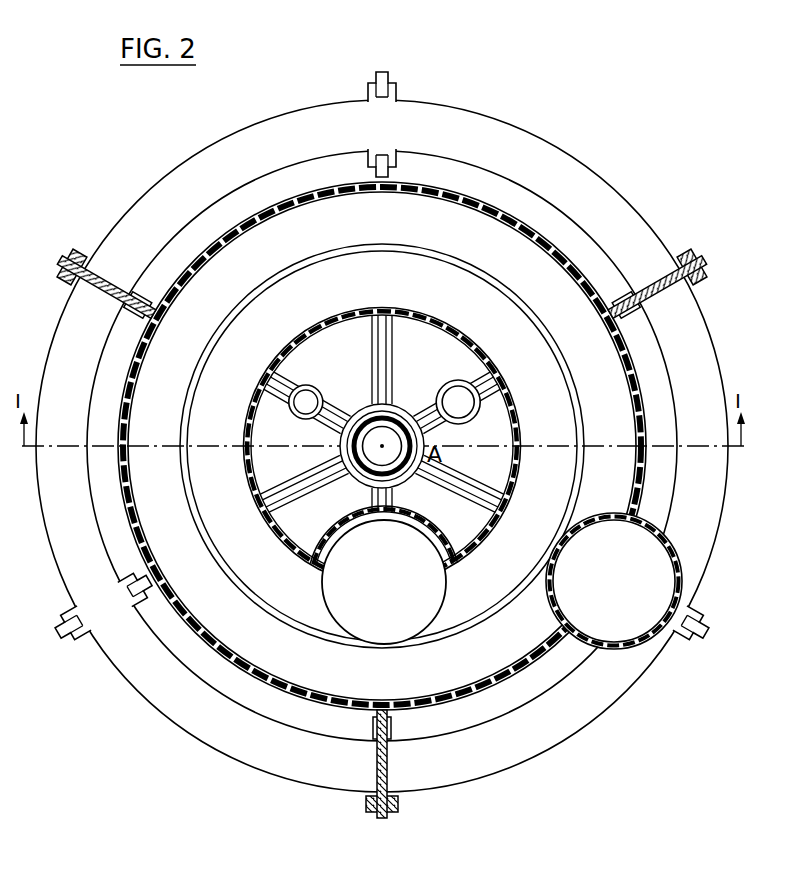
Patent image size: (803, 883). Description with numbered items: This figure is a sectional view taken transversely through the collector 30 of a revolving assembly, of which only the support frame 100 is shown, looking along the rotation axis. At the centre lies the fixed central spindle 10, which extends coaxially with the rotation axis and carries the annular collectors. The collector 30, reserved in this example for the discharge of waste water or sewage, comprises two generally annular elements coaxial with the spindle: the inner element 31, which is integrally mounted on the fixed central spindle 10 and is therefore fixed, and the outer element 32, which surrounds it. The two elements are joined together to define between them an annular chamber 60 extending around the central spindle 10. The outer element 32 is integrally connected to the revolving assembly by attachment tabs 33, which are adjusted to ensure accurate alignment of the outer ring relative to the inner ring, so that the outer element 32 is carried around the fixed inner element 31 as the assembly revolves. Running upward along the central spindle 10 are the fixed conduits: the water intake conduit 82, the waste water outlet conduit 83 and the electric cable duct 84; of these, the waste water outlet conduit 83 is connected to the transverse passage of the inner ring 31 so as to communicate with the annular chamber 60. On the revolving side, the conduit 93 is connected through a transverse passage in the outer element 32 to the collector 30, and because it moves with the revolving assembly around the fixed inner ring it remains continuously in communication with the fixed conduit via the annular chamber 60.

The central spindle 10 is at (393, 432).
The collector 30 is at (507, 193).
The inner element 31 is at (296, 552).
The outer element 32 is at (242, 672).
The attachment tabs 33 is at (110, 292).
The annular chamber 60 is at (505, 663).
The water intake conduit 82 is at (463, 436).
The waste water outlet conduit 83 is at (400, 558).
The electric cable duct 84 is at (314, 396).
The conduit 93 is at (640, 608).
The support frame 100 is at (617, 192).